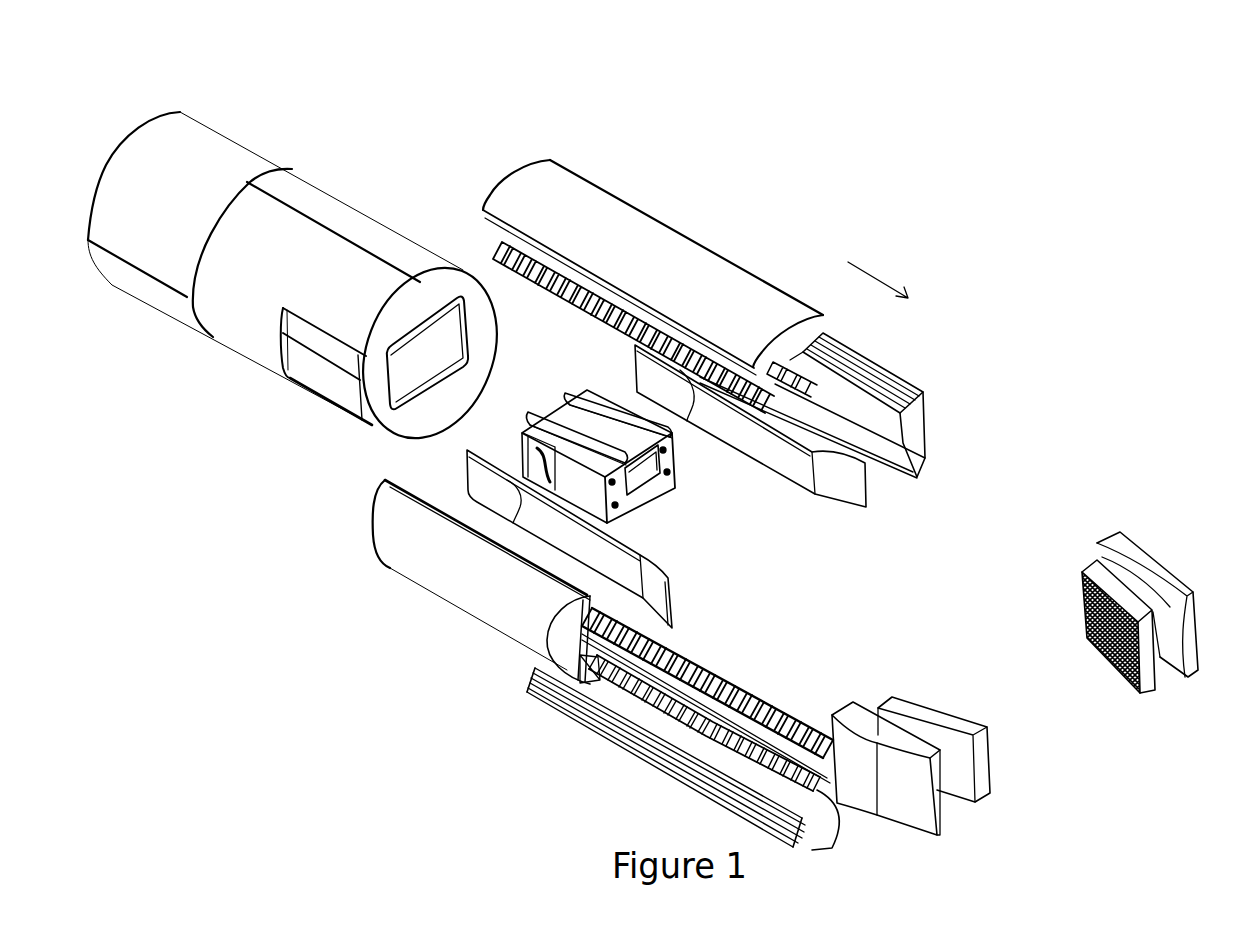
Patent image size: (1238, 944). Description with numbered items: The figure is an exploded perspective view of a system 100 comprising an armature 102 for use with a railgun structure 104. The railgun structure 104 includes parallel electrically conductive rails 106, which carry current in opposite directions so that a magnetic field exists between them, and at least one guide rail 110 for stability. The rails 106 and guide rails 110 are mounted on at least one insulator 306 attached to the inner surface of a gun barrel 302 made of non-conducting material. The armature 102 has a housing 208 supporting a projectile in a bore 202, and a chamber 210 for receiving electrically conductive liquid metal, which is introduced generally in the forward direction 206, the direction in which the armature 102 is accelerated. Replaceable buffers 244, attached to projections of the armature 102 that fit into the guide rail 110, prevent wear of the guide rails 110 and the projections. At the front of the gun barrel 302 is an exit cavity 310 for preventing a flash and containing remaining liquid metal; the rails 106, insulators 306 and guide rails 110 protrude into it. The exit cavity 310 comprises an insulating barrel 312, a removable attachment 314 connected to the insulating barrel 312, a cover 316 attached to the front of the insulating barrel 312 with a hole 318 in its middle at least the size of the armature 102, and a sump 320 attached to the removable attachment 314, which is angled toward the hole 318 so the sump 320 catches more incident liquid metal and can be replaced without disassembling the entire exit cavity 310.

The system 100 is at (1196, 50).
The armature 102 is at (609, 382).
The railgun structure 104 is at (692, 196).
The electrically conductive rails 106 is at (820, 500).
The guide rail 110 is at (758, 700).
The bore 202 is at (640, 487).
The forward direction 206 is at (876, 268).
The housing 208 is at (669, 448).
The chamber 210 is at (670, 452).
The replaceable buffer 244 is at (577, 392).
The gun barrel 302 is at (233, 134).
The insulator 306 is at (713, 250).
The exit cavity 310 is at (308, 269).
The insulating barrel 312 is at (347, 202).
The removable attachment 314 is at (920, 838).
The cover 316 is at (402, 432).
The hole 318 is at (471, 323).
The sump 320 is at (985, 800).